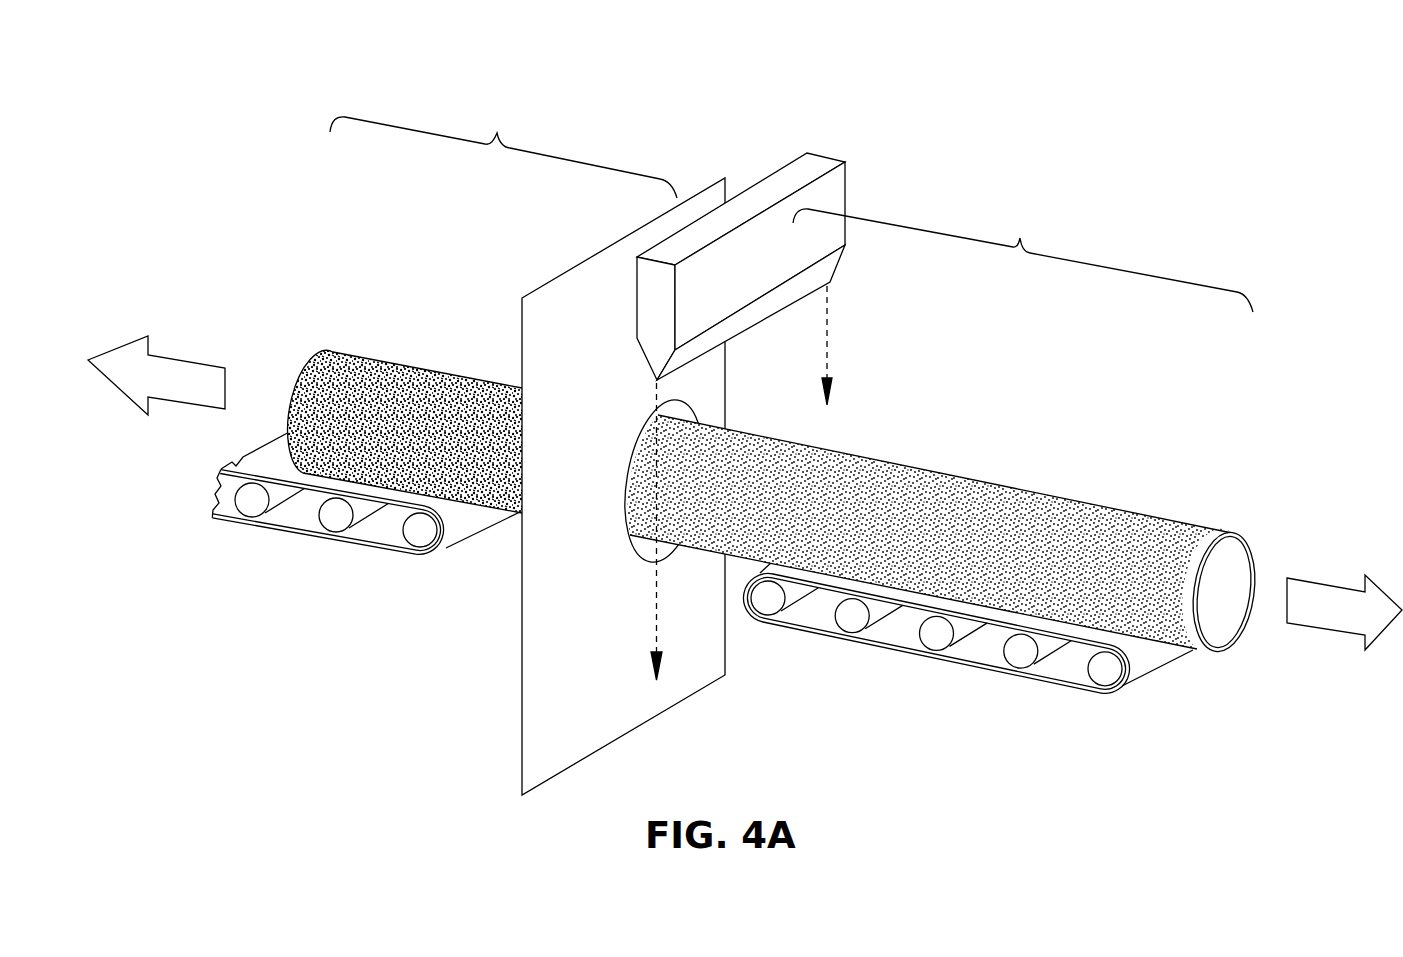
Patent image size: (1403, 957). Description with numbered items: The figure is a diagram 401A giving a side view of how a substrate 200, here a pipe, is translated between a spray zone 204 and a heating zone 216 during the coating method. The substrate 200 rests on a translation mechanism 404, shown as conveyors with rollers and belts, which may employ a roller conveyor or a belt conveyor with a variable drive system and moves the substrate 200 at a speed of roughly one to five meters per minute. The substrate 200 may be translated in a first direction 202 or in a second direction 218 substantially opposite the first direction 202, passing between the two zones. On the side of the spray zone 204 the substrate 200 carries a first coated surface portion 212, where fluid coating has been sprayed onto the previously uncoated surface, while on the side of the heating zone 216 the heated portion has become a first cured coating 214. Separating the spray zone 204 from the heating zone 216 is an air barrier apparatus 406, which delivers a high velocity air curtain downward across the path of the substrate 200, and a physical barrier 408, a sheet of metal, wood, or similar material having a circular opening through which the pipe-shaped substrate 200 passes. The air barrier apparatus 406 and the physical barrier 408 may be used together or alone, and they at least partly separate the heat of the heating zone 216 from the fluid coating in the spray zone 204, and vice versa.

The substrate 200 is at (1255, 556).
The first direction 202 is at (1345, 620).
The spray zone 204 is at (503, 153).
The first coated surface portion 212 is at (392, 363).
The first cured coating 214 is at (1042, 483).
The heating zone 216 is at (1023, 260).
The second direction 218 is at (162, 394).
The diagram 401A is at (1108, 178).
The translation mechanism 404 is at (373, 547).
The air barrier apparatus 406 is at (720, 279).
The physical barrier 408 is at (557, 298).